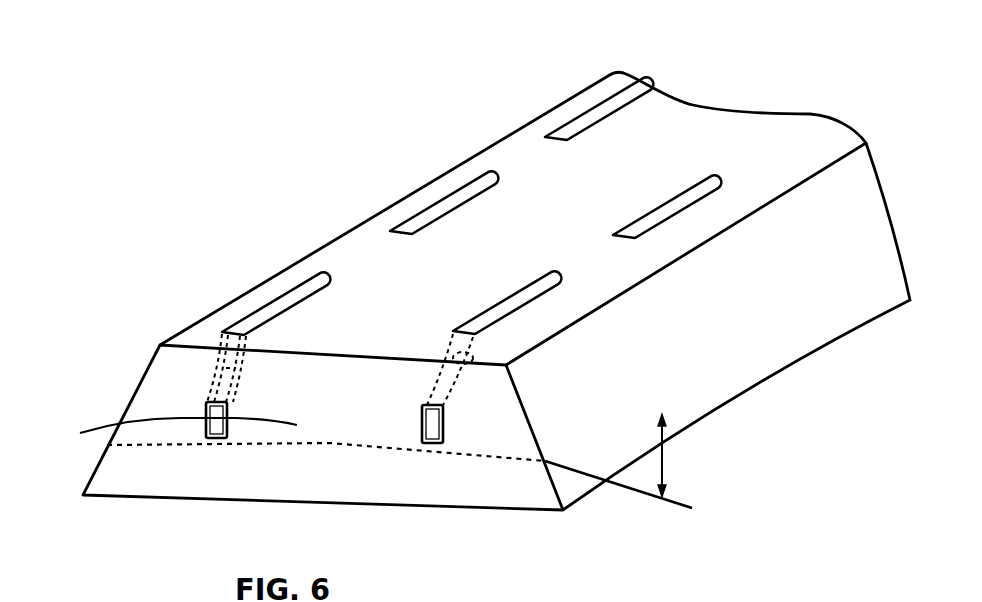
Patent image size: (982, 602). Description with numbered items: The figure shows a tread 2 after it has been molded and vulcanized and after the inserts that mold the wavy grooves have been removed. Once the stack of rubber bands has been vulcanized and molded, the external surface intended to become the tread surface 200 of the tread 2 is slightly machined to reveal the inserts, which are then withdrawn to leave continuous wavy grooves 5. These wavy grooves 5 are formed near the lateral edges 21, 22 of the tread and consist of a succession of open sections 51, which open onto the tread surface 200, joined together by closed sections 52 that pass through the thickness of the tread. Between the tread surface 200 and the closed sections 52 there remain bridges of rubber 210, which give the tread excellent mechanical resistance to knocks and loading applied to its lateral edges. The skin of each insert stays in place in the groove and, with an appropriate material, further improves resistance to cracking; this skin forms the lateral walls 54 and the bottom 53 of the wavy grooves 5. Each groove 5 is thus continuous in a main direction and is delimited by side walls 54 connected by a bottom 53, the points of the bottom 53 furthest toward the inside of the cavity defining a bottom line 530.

The tread 2 is at (313, 194).
The wavy groove 5 is at (598, 115).
The lateral edge 21 is at (217, 308).
The lateral edge 22 is at (635, 342).
The open section 51 is at (422, 215).
The closed section 52 is at (207, 407).
The bottom 53 is at (210, 438).
The lateral wall 54 is at (185, 427).
The tread surface 200 is at (478, 280).
The bridge of rubber 210 is at (522, 165).
The bottom line 530 is at (215, 440).